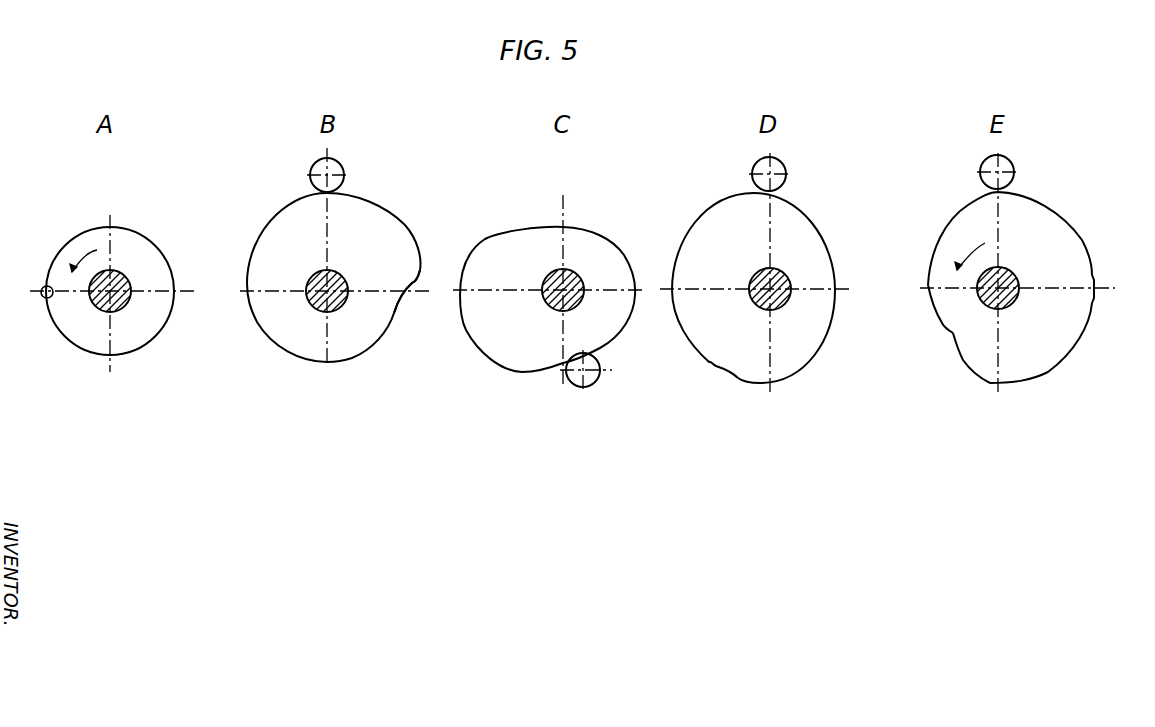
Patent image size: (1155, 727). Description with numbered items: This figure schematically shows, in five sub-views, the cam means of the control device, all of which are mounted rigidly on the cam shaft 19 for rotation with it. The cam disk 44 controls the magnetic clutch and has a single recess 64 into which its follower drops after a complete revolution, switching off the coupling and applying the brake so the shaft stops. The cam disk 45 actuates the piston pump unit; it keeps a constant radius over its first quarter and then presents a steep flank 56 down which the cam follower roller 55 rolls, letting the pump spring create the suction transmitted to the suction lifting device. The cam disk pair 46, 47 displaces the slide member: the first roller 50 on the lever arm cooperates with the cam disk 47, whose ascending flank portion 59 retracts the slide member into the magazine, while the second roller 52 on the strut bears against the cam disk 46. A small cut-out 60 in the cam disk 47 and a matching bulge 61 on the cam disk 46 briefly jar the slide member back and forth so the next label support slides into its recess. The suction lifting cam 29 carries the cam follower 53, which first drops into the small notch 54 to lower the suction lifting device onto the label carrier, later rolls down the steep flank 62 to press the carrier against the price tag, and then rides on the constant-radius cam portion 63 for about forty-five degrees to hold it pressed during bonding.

The cam shaft 19 is at (127, 313).
The suction lifting cam 29 is at (955, 215).
The cam disk 44 is at (140, 247).
The cam disk 45 is at (283, 223).
The cam disk 46 is at (488, 340).
The cam disk 47 is at (725, 213).
The first roller 50 is at (782, 164).
The second roller 52 is at (597, 377).
The cam follower 53 is at (1011, 166).
The notch 54 is at (1094, 279).
The cam follower roller 55 is at (342, 167).
The steep flank 56 is at (412, 284).
The ascending flank portion 59 is at (813, 358).
The cut-out 60 is at (721, 366).
The bulge 61 is at (505, 233).
The steep flank 62 is at (965, 360).
The cam portion of constant radius 63 is at (937, 312).
The recess 64 is at (50, 287).